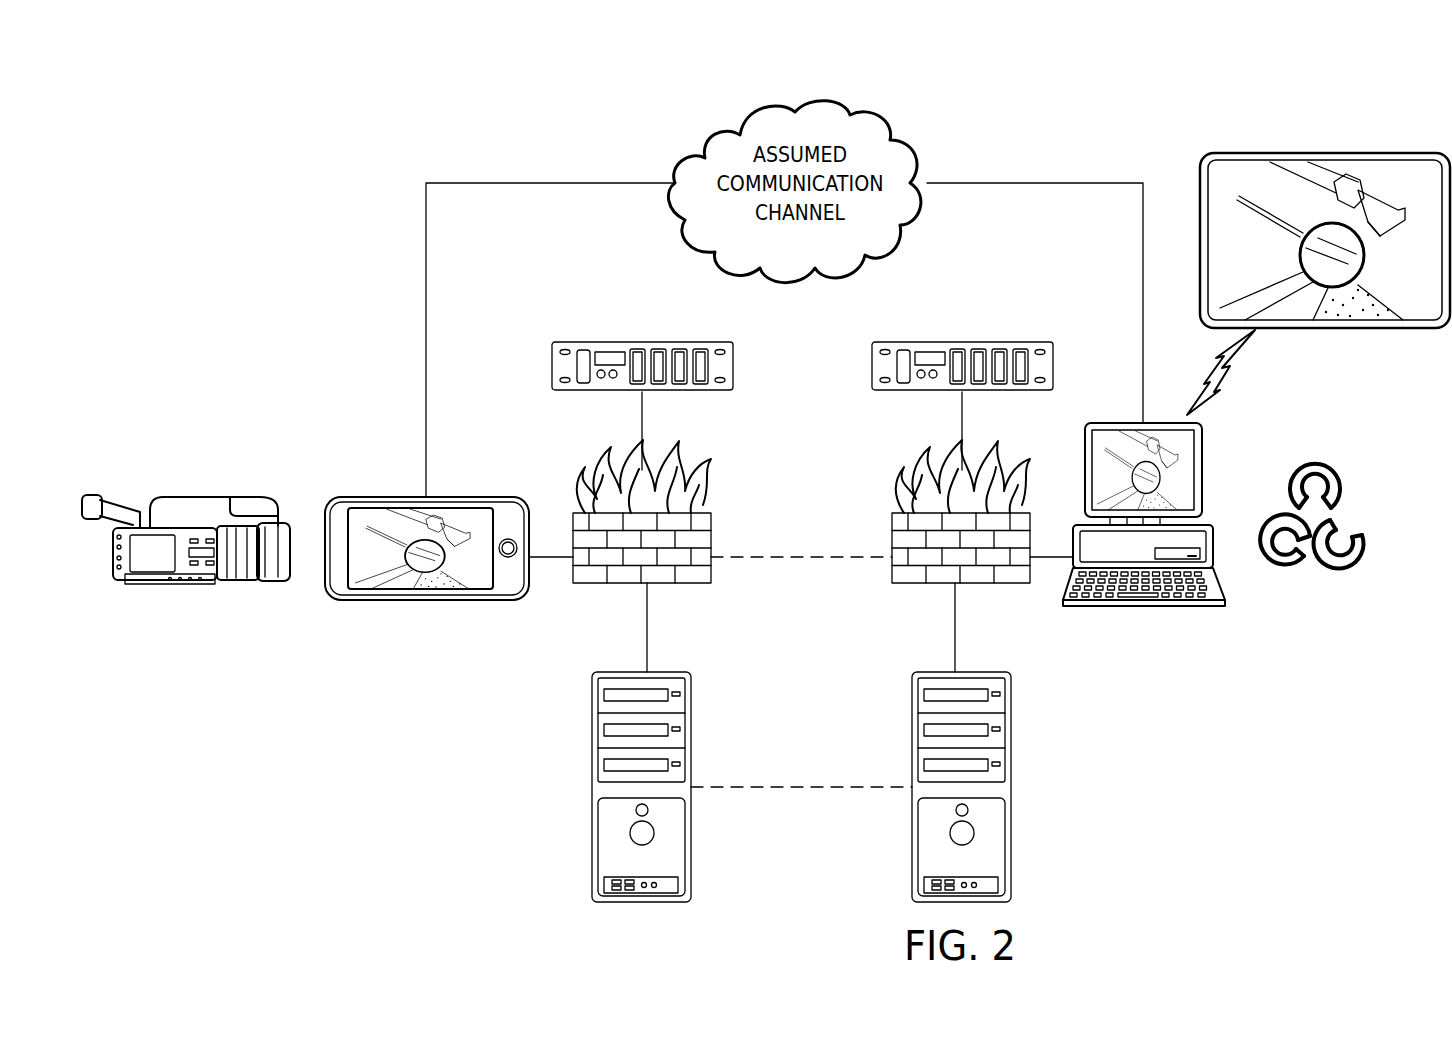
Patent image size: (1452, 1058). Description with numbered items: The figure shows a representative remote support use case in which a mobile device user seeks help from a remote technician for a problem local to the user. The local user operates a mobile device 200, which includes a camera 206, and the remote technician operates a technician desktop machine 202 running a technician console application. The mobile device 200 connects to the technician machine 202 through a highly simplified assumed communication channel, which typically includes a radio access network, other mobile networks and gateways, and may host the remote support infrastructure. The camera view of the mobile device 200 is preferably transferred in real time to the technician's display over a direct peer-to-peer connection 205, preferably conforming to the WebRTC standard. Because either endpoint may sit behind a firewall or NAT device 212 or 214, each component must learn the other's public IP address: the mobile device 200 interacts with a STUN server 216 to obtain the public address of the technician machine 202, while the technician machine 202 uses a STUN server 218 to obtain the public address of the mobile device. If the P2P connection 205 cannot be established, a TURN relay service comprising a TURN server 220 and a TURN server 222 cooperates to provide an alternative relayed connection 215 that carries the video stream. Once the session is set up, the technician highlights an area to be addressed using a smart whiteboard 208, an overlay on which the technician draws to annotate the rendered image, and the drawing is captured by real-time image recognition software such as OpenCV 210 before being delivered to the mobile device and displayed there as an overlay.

The mobile device 200 is at (400, 601).
The technician desktop machine 202 is at (1165, 607).
The P2P connection 205 is at (808, 558).
The camera 206 is at (168, 584).
The smart whiteboard 208 is at (1372, 153).
The OpenCV 210 is at (1315, 465).
The firewall or NAT device 212 is at (618, 584).
The firewall or NAT device 214 is at (977, 584).
The alternative connection 215 is at (800, 788).
The STUN server 216 is at (592, 342).
The STUN server 218 is at (982, 342).
The TURN server 220 is at (592, 812).
The TURN server 222 is at (1011, 812).